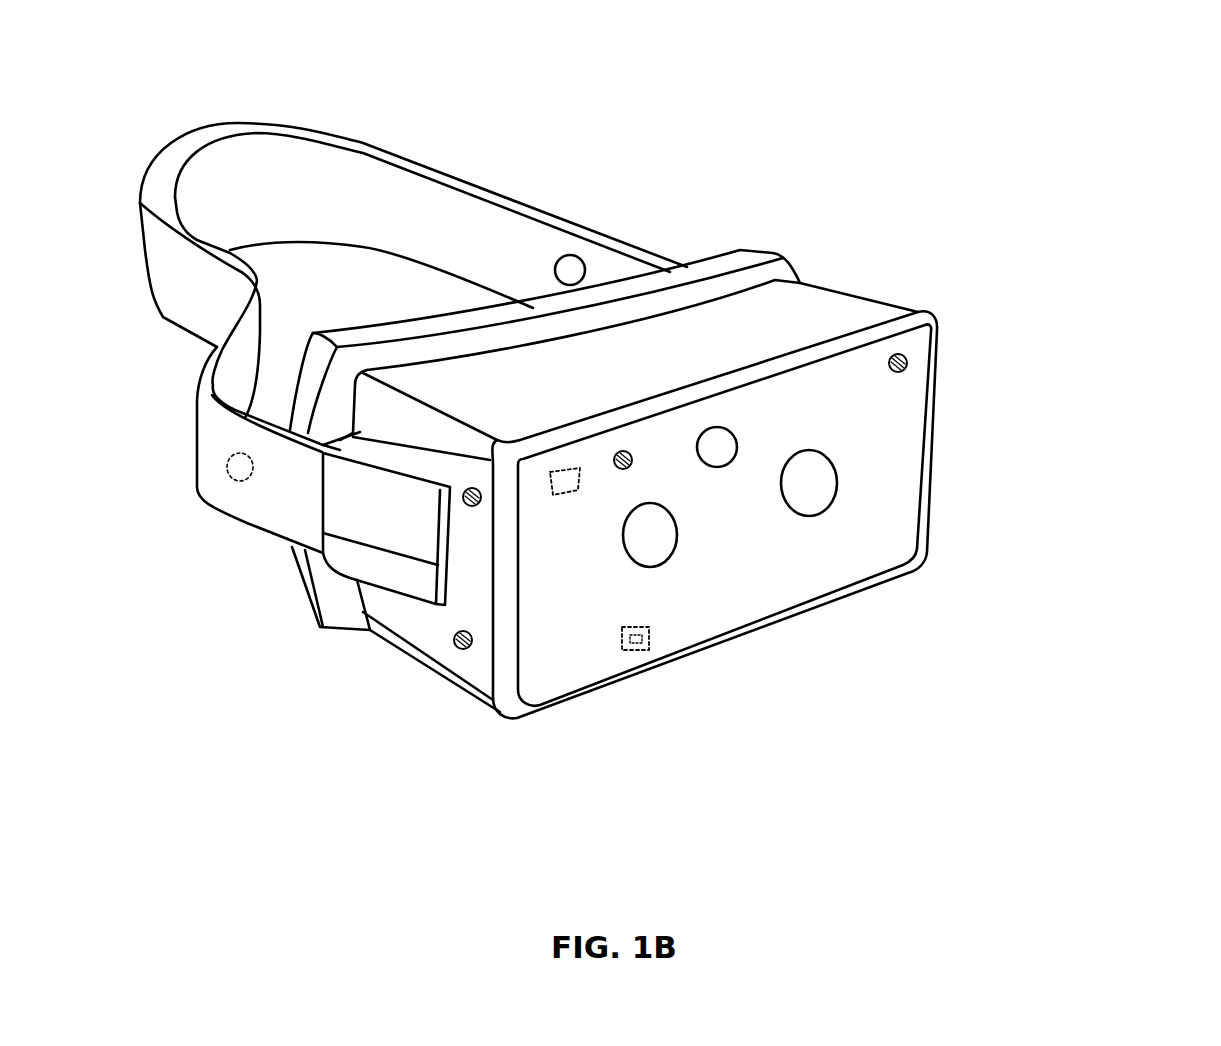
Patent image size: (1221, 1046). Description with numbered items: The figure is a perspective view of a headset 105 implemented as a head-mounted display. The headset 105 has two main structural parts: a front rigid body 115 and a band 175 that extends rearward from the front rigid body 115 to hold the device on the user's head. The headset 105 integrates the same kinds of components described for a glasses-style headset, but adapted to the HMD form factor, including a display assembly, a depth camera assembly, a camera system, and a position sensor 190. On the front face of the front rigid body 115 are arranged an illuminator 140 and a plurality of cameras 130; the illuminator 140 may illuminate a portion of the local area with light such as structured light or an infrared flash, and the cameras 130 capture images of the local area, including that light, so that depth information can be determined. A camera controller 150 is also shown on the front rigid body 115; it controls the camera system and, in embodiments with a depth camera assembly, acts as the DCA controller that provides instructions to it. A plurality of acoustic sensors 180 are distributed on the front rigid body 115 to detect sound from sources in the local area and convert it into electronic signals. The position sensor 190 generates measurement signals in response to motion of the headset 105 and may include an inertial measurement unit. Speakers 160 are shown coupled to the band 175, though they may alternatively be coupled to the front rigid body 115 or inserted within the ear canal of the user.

The headset 105 is at (652, 466).
The band 175 is at (547, 205).
The front rigid body 115 is at (933, 312).
The illuminator 140 is at (730, 430).
The camera 130 is at (677, 556).
The camera controller 150 is at (551, 496).
The position sensor 190 is at (650, 637).
The acoustic sensor 180 is at (455, 637).
The speaker 160 is at (230, 477).